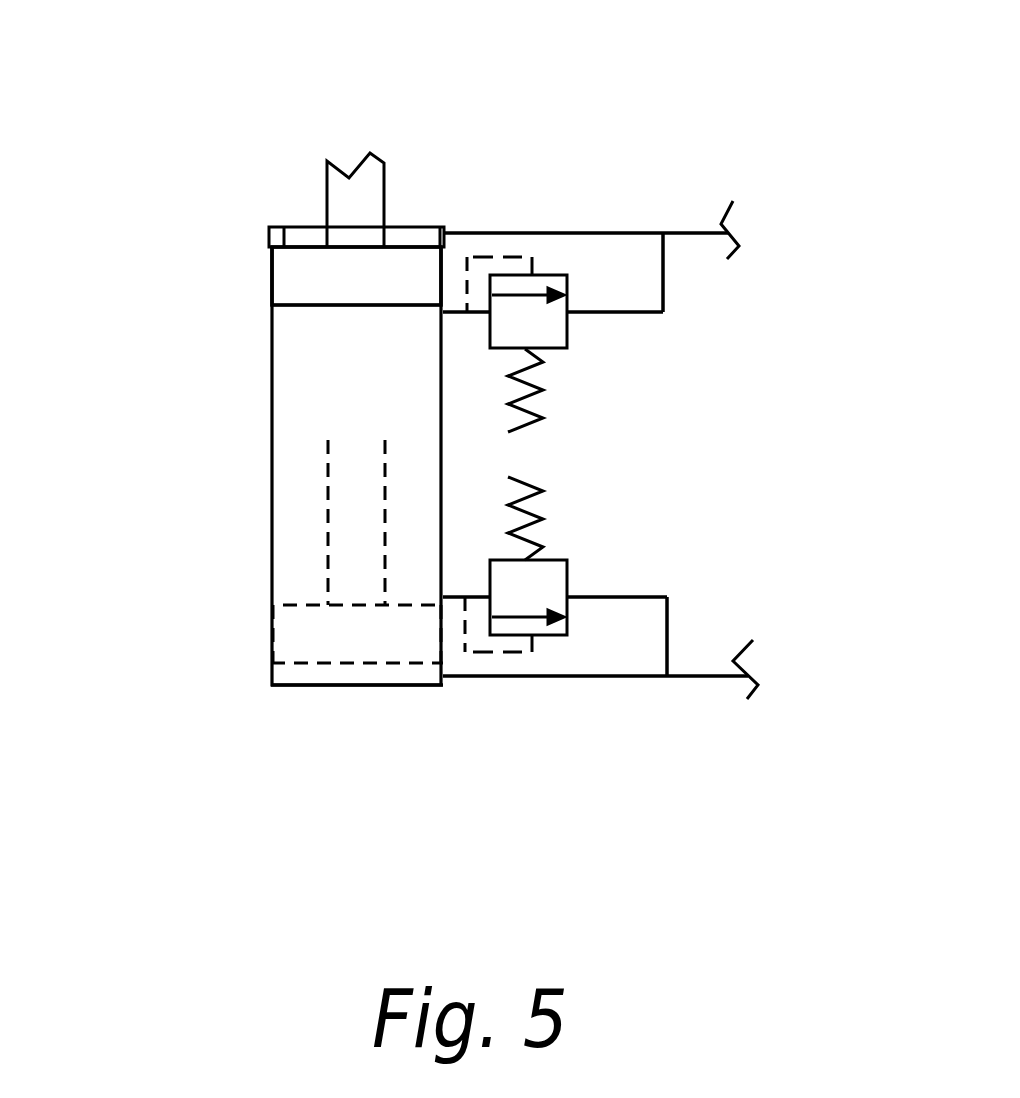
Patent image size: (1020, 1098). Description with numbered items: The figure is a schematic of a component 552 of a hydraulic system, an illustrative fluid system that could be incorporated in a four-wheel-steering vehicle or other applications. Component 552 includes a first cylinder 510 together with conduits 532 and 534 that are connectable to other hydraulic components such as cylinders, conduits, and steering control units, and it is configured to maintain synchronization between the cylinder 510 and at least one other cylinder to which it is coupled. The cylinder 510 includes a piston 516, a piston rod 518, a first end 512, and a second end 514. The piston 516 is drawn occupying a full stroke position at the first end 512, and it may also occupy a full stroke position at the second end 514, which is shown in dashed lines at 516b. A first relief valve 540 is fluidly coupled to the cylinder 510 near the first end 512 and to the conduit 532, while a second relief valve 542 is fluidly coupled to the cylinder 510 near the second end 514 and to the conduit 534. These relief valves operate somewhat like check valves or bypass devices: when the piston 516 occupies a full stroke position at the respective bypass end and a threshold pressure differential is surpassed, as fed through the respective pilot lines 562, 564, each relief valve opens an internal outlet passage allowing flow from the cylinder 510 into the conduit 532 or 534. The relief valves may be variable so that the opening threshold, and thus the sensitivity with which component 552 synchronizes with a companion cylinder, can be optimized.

The first cylinder 510 is at (266, 410).
The first end 512 is at (268, 232).
The second end 514 is at (271, 680).
The piston 516 is at (283, 227).
The piston at second end full stroke position 516b is at (302, 604).
The piston rod 518 is at (322, 202).
The conduit 532 is at (482, 232).
The conduit 534 is at (537, 677).
The first relief valve 540 is at (553, 350).
The second relief valve 542 is at (547, 553).
The component 552 is at (693, 141).
The pilot line 562 is at (508, 257).
The pilot line 564 is at (511, 653).